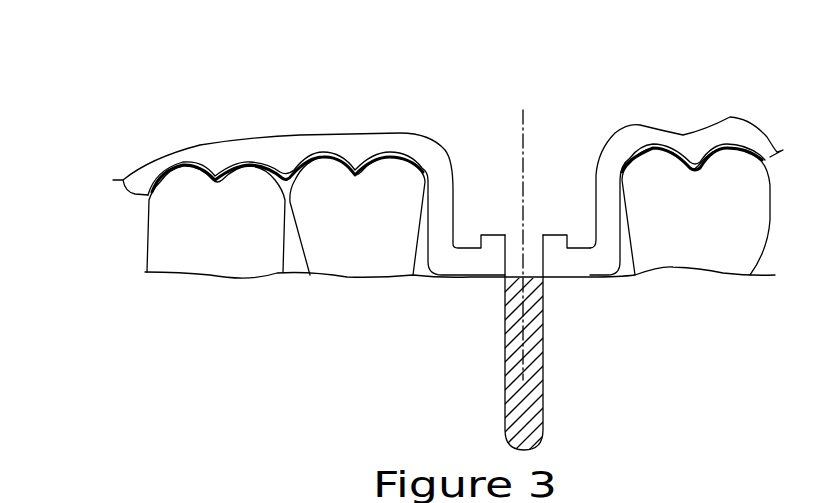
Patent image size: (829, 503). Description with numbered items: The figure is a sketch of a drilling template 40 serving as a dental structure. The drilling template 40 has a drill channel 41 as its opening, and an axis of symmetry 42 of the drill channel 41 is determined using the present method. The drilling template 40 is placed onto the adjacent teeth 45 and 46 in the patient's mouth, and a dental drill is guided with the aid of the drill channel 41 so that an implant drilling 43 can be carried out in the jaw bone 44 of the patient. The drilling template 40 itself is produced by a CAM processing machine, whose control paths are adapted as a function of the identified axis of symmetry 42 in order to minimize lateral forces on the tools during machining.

The drilling template 40 is at (362, 140).
The drill channel 41 is at (543, 235).
The axis of symmetry 42 is at (523, 110).
The implant drilling 43 is at (532, 333).
The jaw bone 44 is at (552, 300).
The adjacent tooth 45 is at (368, 258).
The adjacent tooth 46 is at (685, 240).